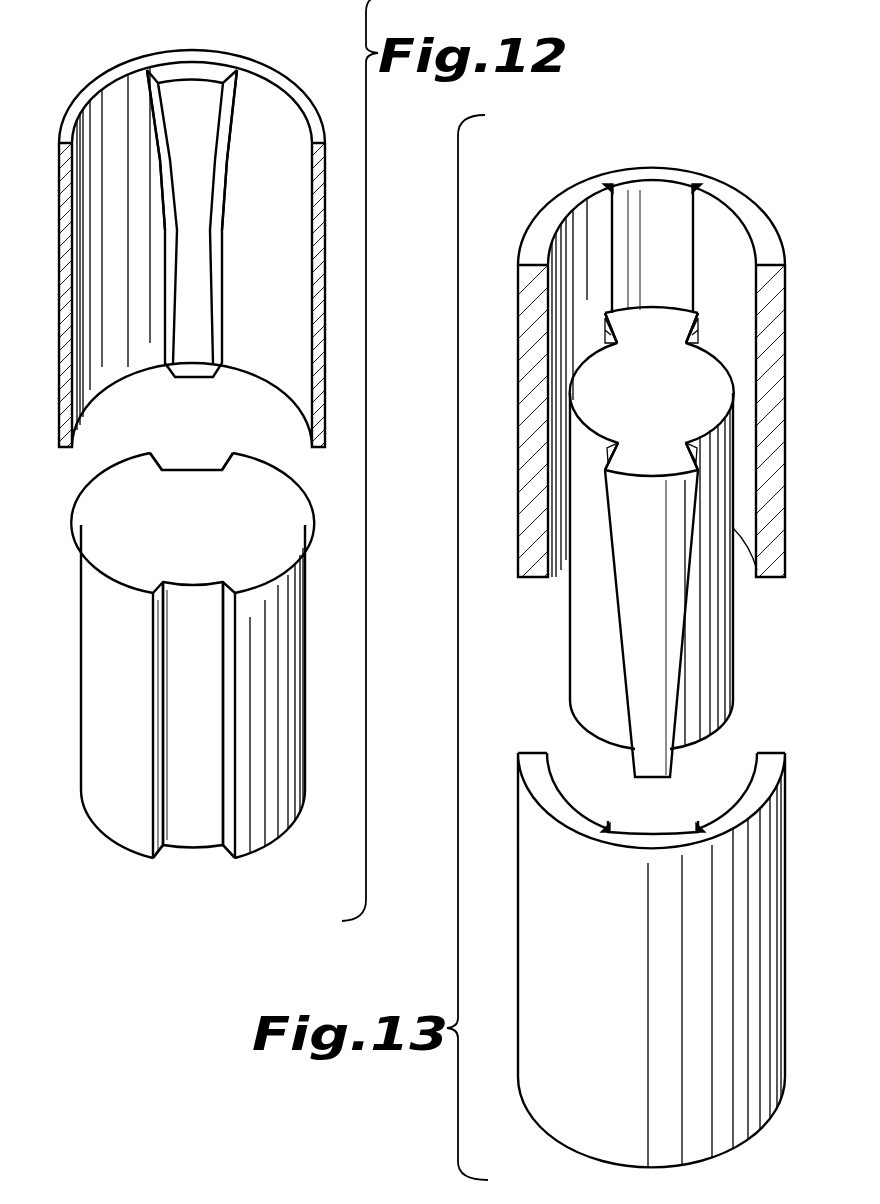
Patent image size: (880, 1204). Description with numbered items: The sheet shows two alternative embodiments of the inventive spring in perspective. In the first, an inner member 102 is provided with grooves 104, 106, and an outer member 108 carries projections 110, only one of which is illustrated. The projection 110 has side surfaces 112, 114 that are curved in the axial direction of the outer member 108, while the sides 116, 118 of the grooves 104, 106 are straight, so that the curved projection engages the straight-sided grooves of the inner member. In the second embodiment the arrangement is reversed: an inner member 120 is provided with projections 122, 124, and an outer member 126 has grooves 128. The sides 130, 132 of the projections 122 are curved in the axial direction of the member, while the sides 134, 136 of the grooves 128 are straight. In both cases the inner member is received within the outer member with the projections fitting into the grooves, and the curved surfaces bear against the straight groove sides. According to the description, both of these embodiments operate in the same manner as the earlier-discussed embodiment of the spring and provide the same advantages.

In FIG. 12, the inner member 102 is at (297, 663).
In FIG. 12, the groove 104 is at (188, 462).
In FIG. 12, the groove 106 is at (193, 835).
In FIG. 12, the outer member 108 is at (265, 110).
In FIG. 12, the projection 110 is at (188, 95).
In FIG. 12, the side surface 112 is at (162, 160).
In FIG. 12, the side surface 114 is at (222, 172).
In FIG. 12, the side 116 is at (158, 458).
In FIG. 12, the side 118 is at (236, 460).
In FIG. 13, the inner member 120 is at (592, 598).
In FIG. 13, the projection 122 is at (657, 307).
In FIG. 13, the projection 124 is at (646, 482).
In FIG. 13, the outer member 126 is at (742, 212).
In FIG. 13, the groove 128 is at (650, 197).
In FIG. 13, the side 130 is at (601, 341).
In FIG. 13, the side 132 is at (697, 333).
In FIG. 13, the side 134 is at (614, 182).
In FIG. 13, the side 136 is at (690, 182).